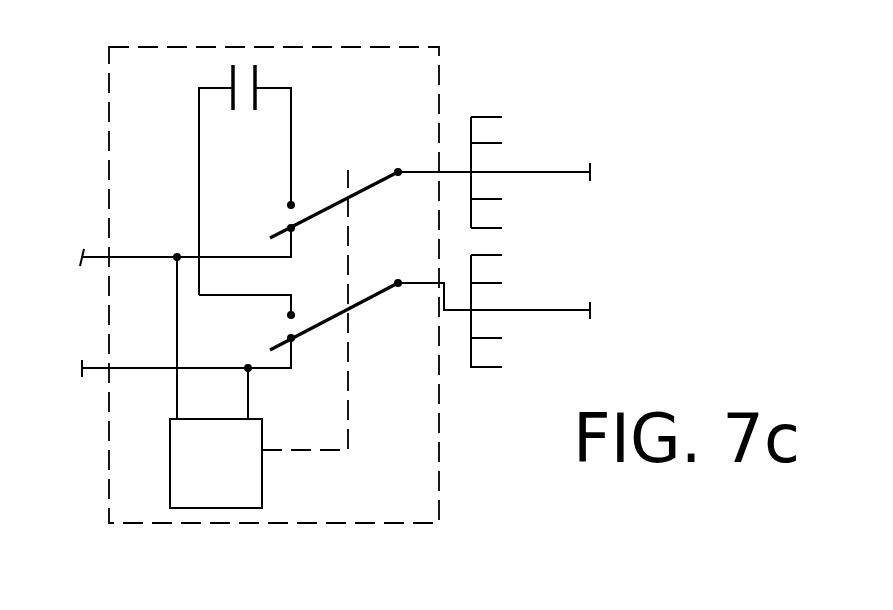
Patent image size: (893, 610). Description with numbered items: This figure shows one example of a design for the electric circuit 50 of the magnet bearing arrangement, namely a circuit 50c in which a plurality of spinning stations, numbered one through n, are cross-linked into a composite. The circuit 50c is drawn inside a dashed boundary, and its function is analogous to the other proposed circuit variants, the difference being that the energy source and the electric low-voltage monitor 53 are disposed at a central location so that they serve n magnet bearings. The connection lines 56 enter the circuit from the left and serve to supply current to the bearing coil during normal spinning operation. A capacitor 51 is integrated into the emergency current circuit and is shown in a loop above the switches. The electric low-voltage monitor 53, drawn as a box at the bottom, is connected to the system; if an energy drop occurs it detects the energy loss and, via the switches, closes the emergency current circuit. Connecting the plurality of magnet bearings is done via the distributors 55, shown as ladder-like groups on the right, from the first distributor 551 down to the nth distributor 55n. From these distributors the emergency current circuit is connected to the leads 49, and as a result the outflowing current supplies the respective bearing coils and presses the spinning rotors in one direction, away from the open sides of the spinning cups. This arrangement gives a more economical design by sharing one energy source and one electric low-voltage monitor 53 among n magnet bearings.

The electric circuit 50 is at (472, 461).
The circuit 50c is at (440, 60).
The capacitor 51 is at (245, 88).
The electrical low-voltage monitor 53 is at (225, 482).
The distributors 55 is at (471, 218).
The distributor 551 is at (507, 118).
The distributor 55n is at (507, 229).
The leads 49 is at (563, 172).
The connection lines 56 is at (98, 367).